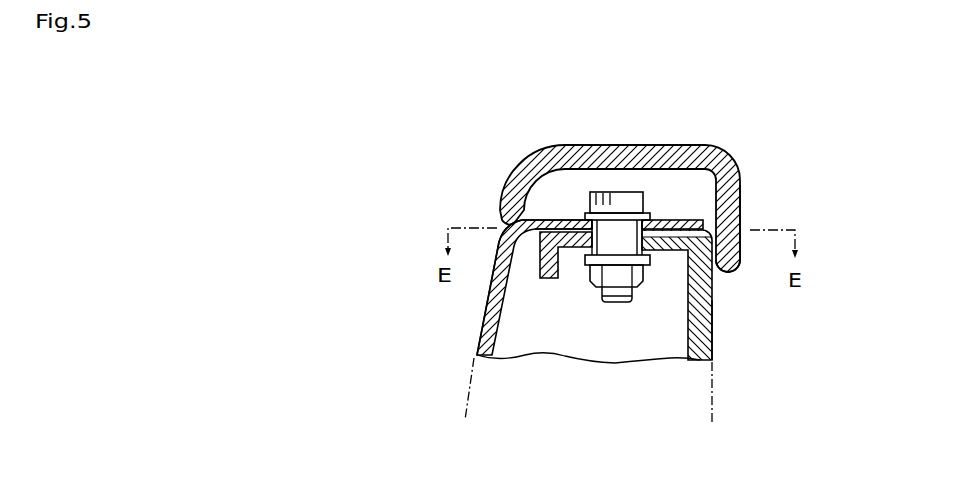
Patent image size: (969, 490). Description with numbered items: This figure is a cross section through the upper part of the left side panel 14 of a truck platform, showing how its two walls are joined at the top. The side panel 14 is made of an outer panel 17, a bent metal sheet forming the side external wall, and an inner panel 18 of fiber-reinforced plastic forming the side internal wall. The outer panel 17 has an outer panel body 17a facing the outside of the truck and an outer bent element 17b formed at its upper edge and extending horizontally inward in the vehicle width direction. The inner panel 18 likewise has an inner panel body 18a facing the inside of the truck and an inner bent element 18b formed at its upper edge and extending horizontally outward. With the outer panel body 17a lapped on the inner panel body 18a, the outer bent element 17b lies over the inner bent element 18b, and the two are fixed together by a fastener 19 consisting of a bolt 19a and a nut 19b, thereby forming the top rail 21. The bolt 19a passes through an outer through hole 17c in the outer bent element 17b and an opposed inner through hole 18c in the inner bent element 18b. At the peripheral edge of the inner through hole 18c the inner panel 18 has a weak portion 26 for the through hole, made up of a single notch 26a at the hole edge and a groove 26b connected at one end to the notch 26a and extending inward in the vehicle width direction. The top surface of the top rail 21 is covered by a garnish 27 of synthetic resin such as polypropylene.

The side panel 14 is at (471, 323).
The outer panel 17 is at (498, 248).
The outer panel body 17a is at (476, 350).
The outer bent element 17b is at (557, 219).
The outer through hole 17c is at (623, 228).
The inner panel 18 is at (730, 295).
The inner panel body 18a is at (713, 340).
The inner bent element 18b is at (583, 252).
The inner through hole 18c is at (613, 303).
The fastener 19 is at (710, 300).
The bolt 19a is at (627, 288).
The nut 19b is at (650, 266).
The top rail 21 is at (536, 215).
The weak portion for through hole 26 is at (742, 186).
The notch 26a is at (628, 213).
The groove 26b is at (683, 220).
The garnish 27 is at (741, 208).